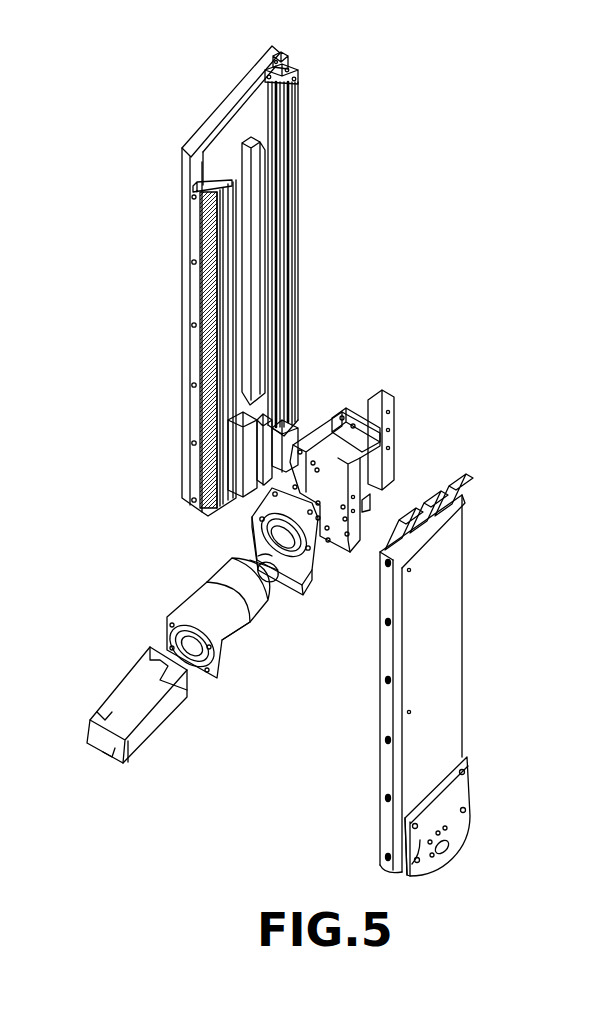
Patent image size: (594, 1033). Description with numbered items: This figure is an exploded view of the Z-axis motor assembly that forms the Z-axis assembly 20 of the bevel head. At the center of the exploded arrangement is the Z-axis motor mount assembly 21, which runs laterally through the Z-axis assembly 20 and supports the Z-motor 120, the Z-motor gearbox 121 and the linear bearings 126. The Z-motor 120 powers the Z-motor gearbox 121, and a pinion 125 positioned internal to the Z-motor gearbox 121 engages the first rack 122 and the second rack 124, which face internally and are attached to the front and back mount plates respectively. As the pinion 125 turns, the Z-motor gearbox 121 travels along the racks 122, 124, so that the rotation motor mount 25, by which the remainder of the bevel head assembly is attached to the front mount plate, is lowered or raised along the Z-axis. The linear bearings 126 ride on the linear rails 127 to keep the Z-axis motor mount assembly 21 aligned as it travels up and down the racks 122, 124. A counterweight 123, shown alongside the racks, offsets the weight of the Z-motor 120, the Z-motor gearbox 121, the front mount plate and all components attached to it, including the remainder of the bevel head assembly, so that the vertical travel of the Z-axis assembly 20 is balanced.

The Z-axis assembly 20 is at (443, 102).
The Z-axis motor mount assembly 21 is at (307, 480).
The rotation motor mount 25 is at (457, 787).
The Z-motor 120 is at (150, 677).
The Z-motor gearbox 121 is at (210, 608).
The first rack 122 is at (193, 410).
The counterweight 123 is at (288, 290).
The second rack 124 is at (380, 715).
The pinion 125 is at (268, 568).
The linear bearings 126 is at (328, 435).
The linear rails 127 is at (252, 135).